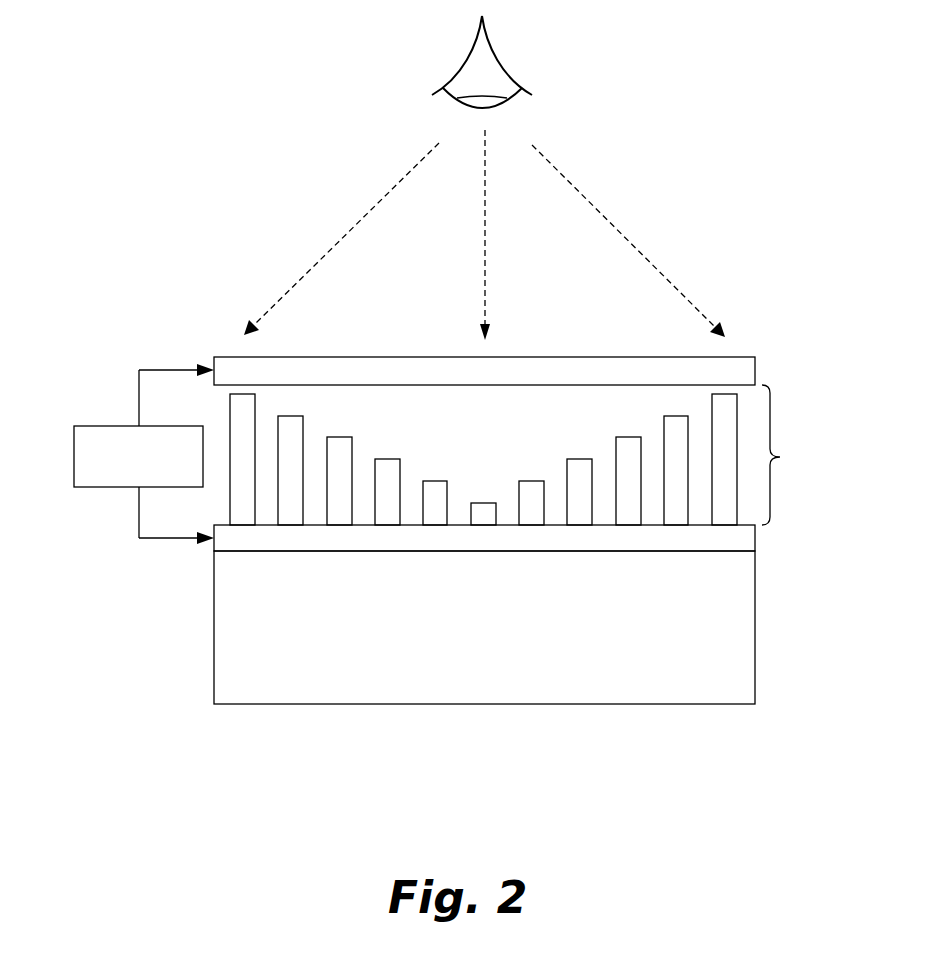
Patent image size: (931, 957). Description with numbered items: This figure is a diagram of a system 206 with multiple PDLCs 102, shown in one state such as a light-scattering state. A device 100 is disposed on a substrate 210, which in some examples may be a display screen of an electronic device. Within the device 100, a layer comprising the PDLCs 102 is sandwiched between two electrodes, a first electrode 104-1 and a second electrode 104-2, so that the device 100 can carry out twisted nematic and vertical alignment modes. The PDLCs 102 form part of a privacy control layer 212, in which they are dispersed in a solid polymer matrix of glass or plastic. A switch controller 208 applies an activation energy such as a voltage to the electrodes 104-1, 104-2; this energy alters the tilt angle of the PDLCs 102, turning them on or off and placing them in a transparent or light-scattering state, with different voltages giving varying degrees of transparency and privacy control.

The device 100 is at (711, 250).
The PDLCs 102 is at (244, 493).
The first electrode 104-1 is at (235, 540).
The second electrode 104-2 is at (242, 372).
The system 206 is at (226, 102).
The switch controller 208 is at (103, 450).
The substrate 210 is at (348, 663).
The privacy control layer 212 is at (793, 455).